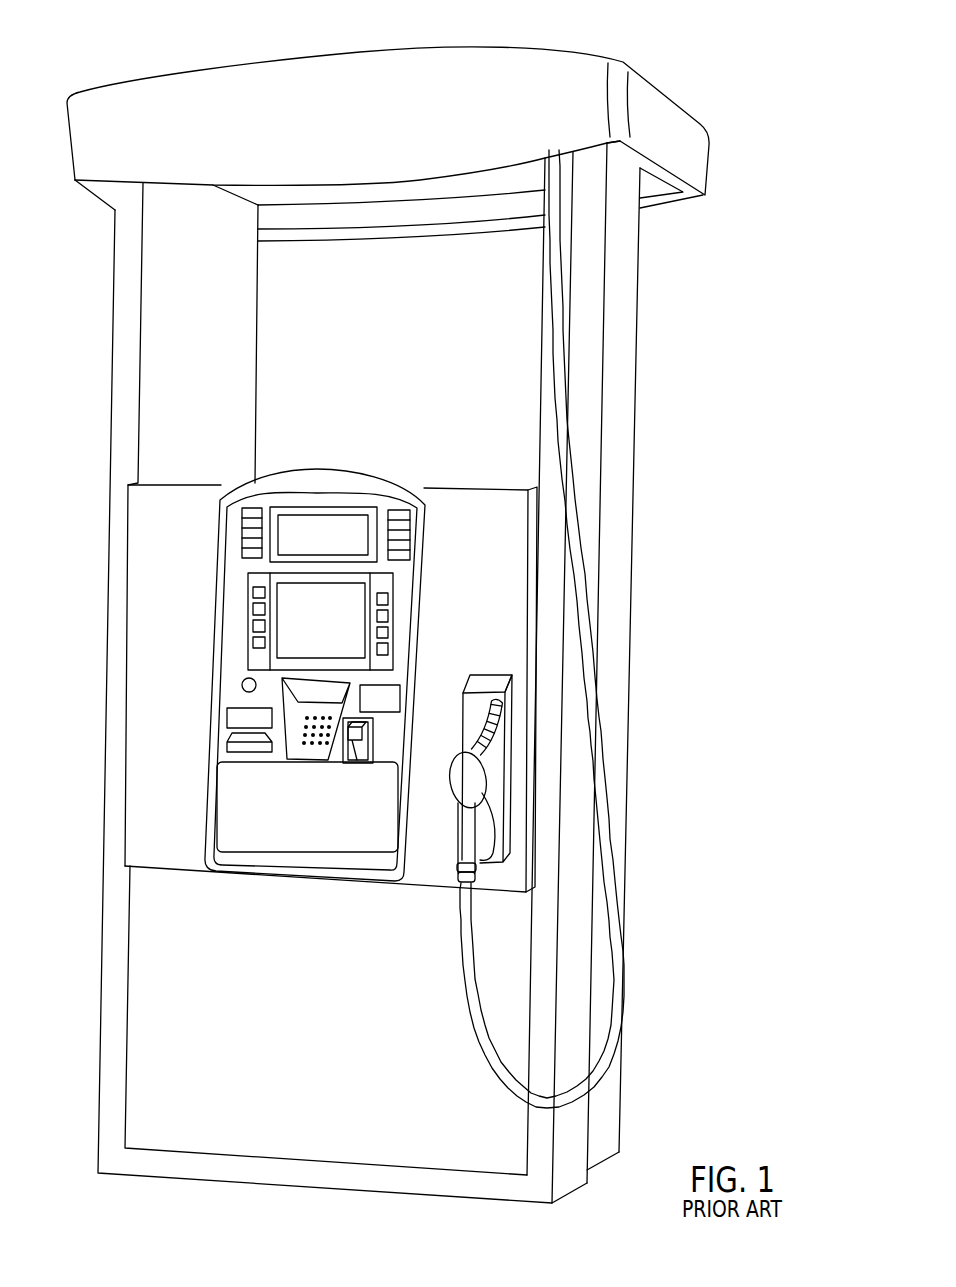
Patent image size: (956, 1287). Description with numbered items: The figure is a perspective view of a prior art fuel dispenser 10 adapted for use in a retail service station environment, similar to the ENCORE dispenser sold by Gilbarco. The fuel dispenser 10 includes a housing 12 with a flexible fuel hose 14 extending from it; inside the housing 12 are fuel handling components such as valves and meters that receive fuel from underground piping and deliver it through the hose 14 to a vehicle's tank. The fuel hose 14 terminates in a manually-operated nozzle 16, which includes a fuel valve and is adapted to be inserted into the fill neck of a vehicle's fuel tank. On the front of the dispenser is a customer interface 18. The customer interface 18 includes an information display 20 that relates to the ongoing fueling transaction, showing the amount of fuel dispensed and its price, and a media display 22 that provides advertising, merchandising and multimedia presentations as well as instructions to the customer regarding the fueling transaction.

The fuel dispenser 10 is at (752, 84).
The housing 12 is at (637, 497).
The fuel hose 14 is at (597, 663).
The nozzle 16 is at (465, 840).
The customer interface 18 is at (282, 459).
The information display 20 is at (342, 507).
The media display 22 is at (357, 595).